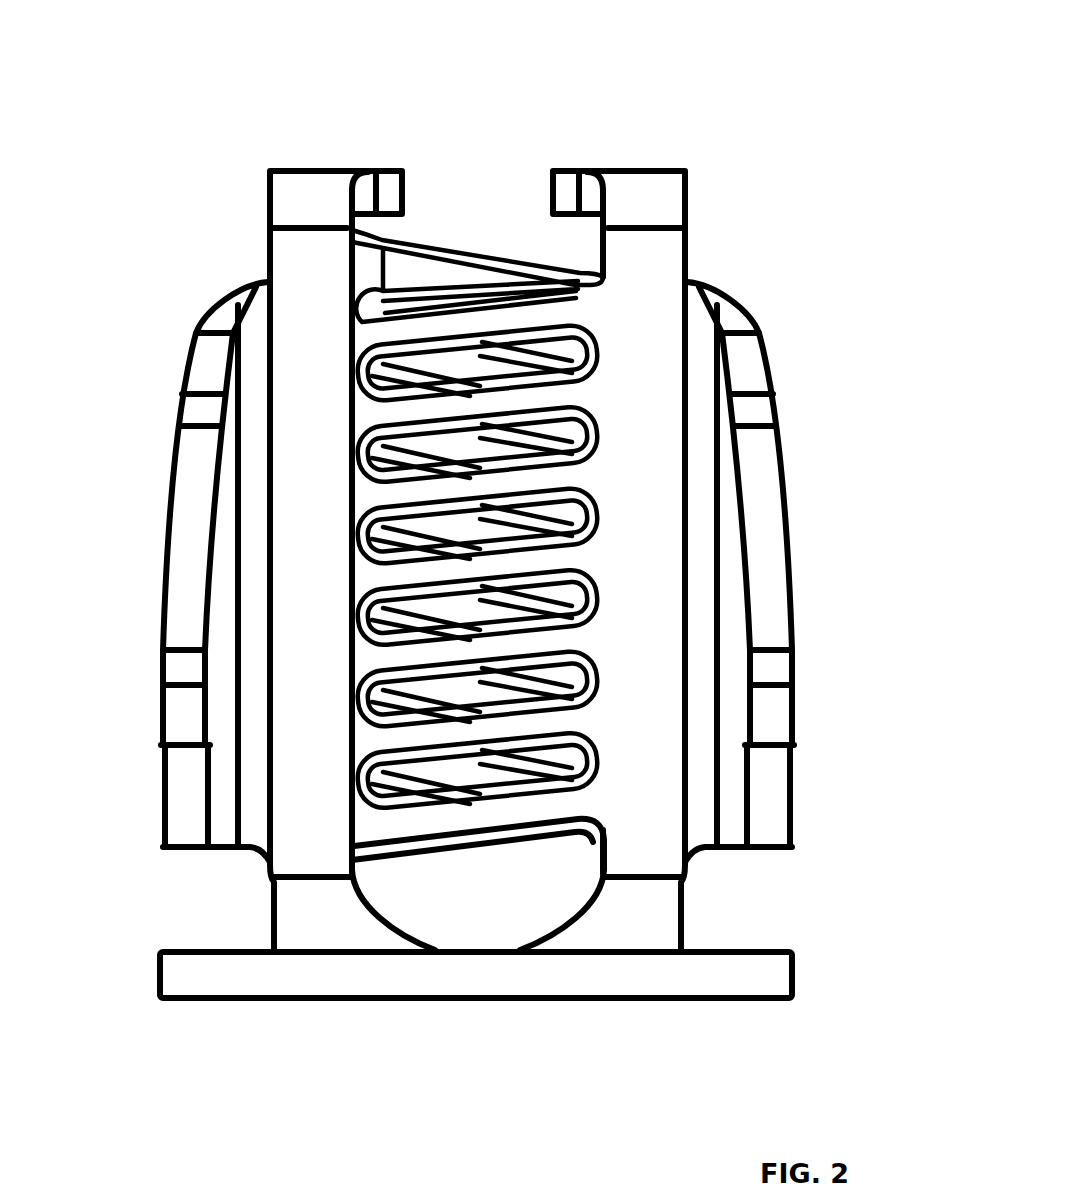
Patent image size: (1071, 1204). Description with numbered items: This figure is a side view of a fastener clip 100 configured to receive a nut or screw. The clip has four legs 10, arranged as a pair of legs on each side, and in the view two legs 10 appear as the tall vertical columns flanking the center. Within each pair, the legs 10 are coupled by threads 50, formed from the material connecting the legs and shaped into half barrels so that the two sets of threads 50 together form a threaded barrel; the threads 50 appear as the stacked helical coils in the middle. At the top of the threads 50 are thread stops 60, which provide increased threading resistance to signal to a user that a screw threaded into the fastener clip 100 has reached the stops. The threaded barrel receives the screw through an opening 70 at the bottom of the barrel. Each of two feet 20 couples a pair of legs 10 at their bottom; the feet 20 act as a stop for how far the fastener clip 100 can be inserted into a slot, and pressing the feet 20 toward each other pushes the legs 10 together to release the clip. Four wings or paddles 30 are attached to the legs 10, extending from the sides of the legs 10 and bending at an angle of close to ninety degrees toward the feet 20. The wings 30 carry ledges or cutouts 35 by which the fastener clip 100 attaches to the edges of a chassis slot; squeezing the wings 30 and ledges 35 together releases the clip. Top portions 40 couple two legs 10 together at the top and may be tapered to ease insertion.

The fastener clip 100 is at (735, 103).
The leg 10 is at (290, 293).
The foot 20 is at (187, 985).
The wing/paddle 30 is at (190, 347).
The ledge/cutout 35 is at (163, 742).
The top portion 40 is at (312, 190).
The threads 50 is at (545, 482).
The thread stop 60 is at (391, 192).
The opening 70 is at (518, 886).